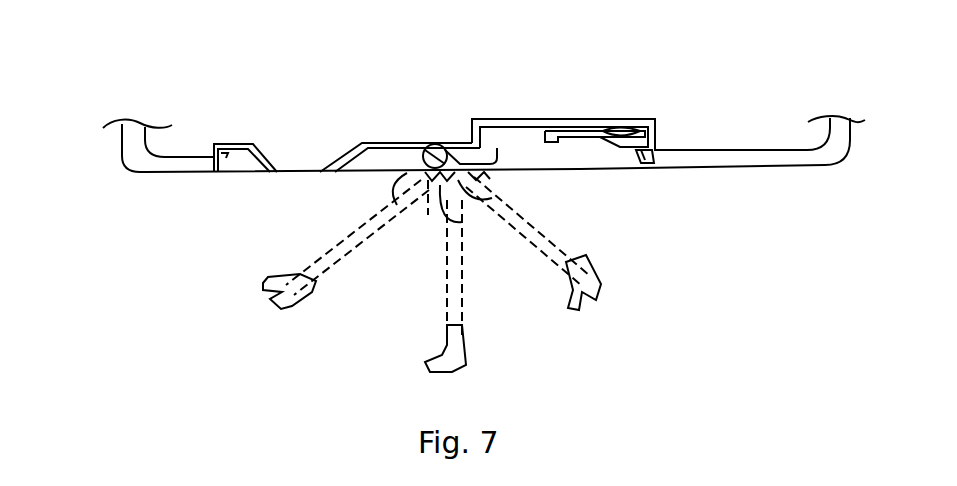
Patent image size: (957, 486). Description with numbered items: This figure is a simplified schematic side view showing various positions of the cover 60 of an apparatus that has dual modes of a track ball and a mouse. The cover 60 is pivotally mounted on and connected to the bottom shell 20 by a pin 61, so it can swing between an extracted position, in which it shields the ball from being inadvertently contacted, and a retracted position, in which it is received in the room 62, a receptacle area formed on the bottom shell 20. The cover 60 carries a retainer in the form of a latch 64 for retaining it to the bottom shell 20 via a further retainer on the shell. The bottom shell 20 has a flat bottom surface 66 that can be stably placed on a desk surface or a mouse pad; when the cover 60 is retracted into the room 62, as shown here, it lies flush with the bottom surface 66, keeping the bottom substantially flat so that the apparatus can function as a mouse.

The bottom shell 20 is at (133, 167).
The cover 60 is at (576, 119).
The pin 61 is at (436, 144).
The room 62 is at (583, 164).
The latch 64 is at (645, 166).
The bottom surface 66 is at (750, 168).